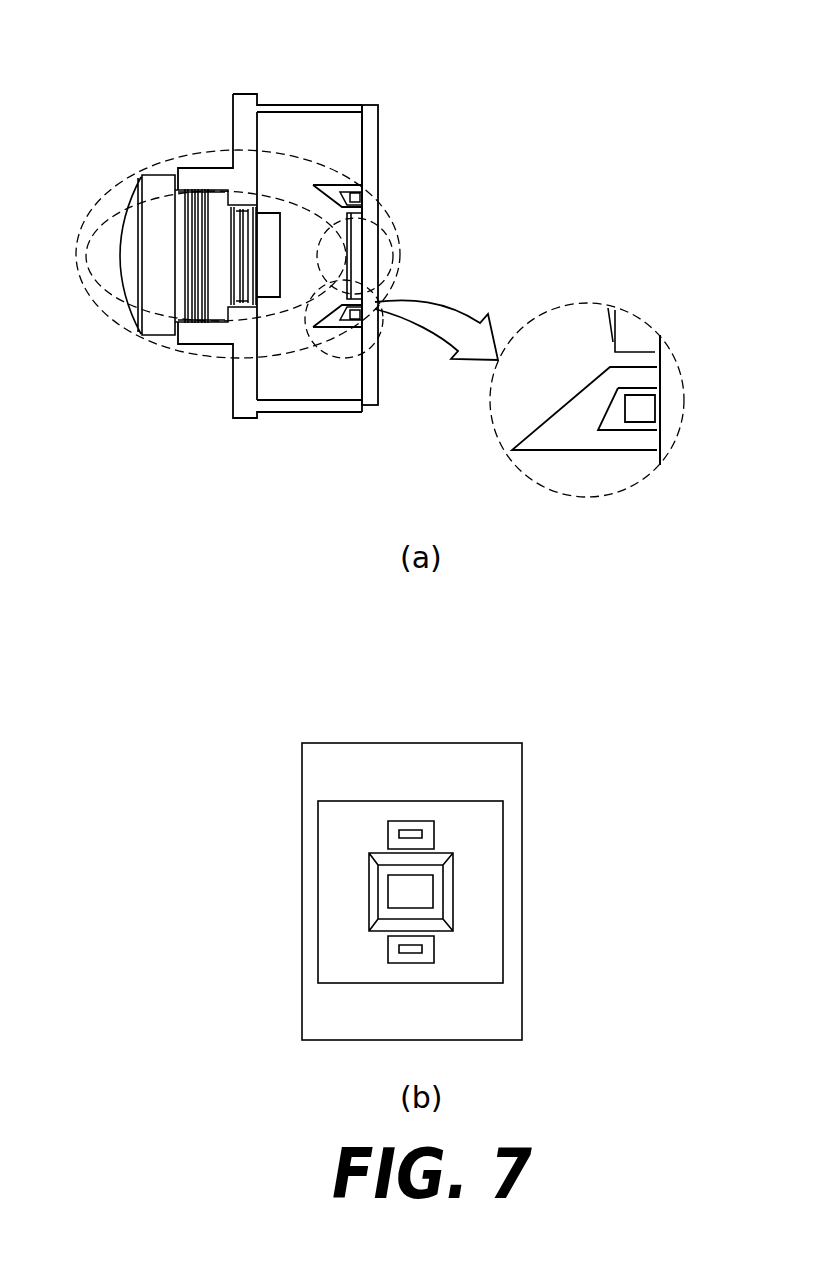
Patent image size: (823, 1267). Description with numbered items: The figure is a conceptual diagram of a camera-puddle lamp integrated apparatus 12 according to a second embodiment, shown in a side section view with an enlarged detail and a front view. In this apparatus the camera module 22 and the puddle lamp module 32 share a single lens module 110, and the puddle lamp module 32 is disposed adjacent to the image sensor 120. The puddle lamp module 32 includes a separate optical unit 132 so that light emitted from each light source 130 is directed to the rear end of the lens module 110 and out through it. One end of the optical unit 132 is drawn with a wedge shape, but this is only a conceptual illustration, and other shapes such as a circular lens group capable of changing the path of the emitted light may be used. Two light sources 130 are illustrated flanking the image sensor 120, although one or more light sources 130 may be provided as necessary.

The camera-puddle lamp integrated apparatus 12 is at (82, 28).
The camera module 22 is at (103, 291).
The puddle lamp module 32 is at (107, 195).
The lens module 110 is at (157, 180).
The image sensor 120 is at (353, 268).
The light source 130 is at (362, 197).
The optical unit 132 is at (367, 185).